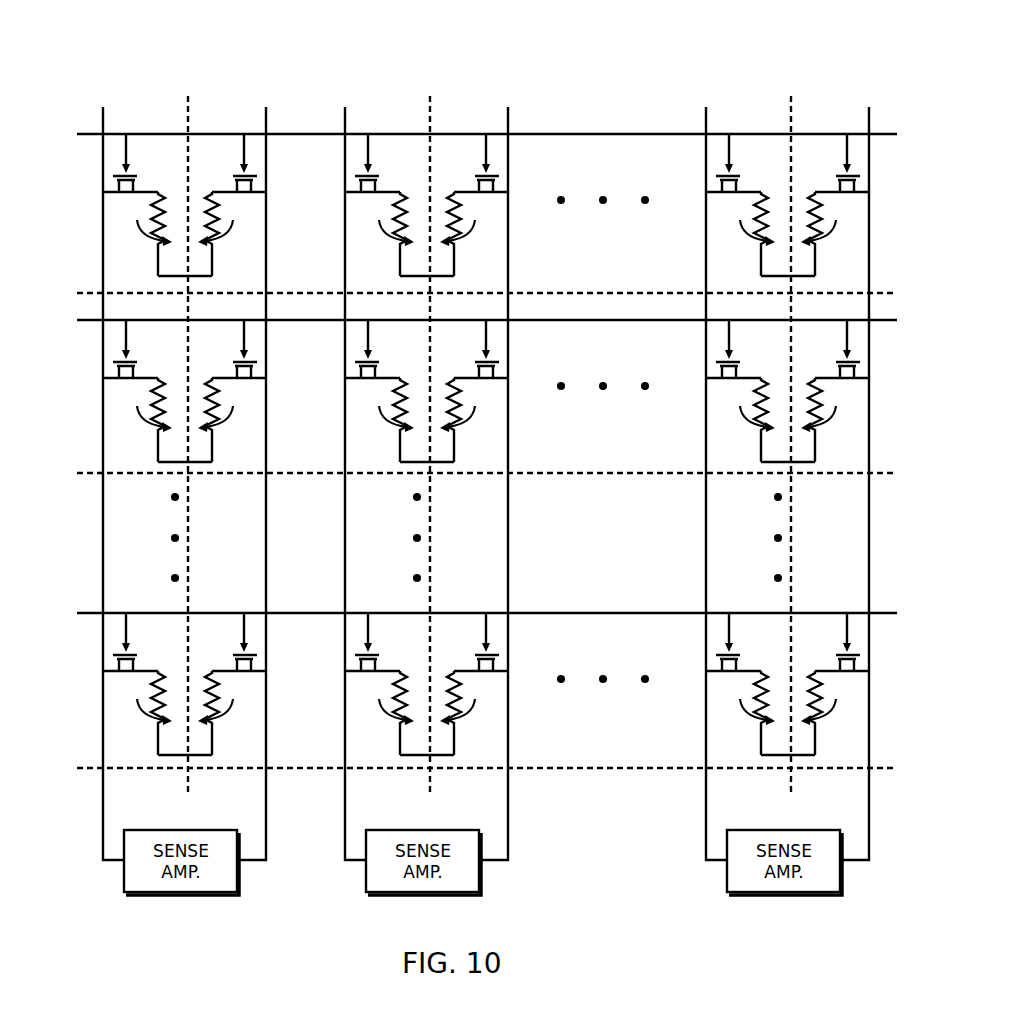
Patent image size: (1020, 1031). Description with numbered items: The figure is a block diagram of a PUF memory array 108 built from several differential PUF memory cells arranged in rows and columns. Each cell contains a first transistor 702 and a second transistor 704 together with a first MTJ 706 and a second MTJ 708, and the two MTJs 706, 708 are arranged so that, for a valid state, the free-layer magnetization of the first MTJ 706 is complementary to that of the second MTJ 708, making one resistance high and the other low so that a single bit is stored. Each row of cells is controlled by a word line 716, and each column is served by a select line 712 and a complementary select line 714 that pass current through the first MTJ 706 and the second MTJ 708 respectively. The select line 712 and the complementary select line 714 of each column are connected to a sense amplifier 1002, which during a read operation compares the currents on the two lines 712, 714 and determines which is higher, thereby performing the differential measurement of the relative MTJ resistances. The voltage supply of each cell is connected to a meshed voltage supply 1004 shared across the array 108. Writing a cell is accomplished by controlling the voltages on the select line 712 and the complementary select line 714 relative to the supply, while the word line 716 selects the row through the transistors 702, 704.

The PUF memory array 108 is at (64, 52).
The first transistor 702 is at (437, 402).
The second transistor 704 is at (534, 402).
The first MTJ 706 is at (446, 473).
The second MTJ 708 is at (526, 473).
The select line 712 is at (424, 479).
The complementary select line 714 is at (572, 479).
The word line 716 is at (472, 363).
The sense amplifier 1002 is at (482, 850).
The meshed voltage supply 1004 is at (90, 767).